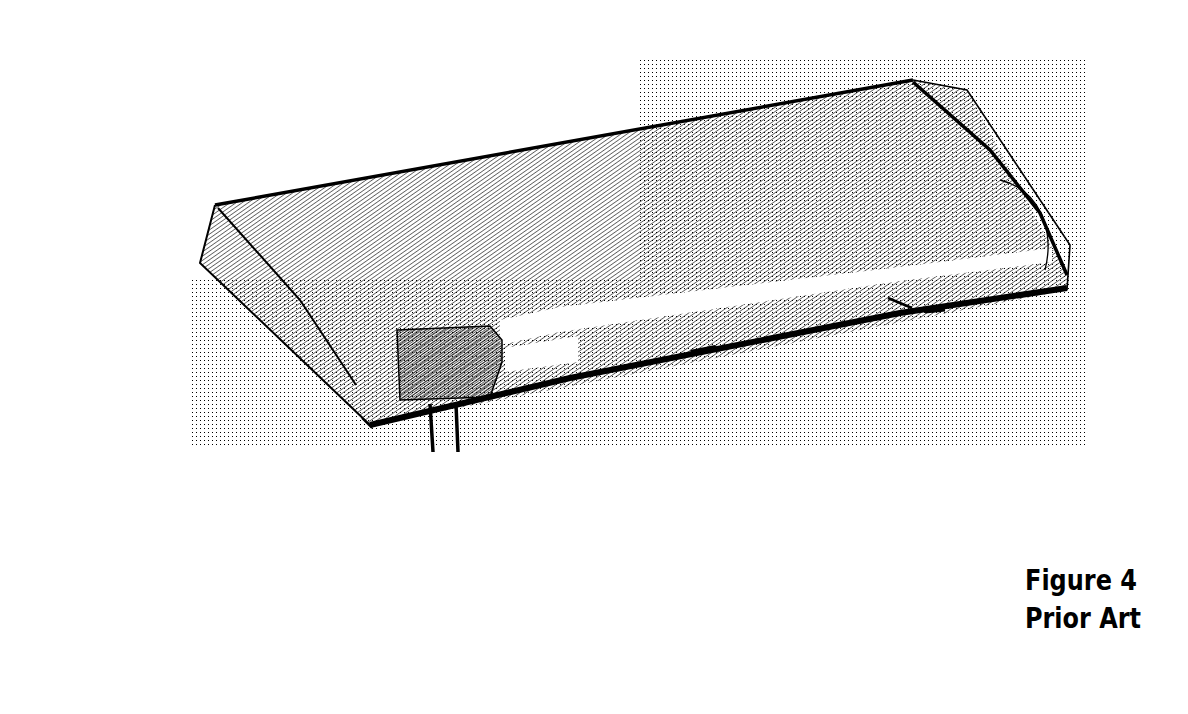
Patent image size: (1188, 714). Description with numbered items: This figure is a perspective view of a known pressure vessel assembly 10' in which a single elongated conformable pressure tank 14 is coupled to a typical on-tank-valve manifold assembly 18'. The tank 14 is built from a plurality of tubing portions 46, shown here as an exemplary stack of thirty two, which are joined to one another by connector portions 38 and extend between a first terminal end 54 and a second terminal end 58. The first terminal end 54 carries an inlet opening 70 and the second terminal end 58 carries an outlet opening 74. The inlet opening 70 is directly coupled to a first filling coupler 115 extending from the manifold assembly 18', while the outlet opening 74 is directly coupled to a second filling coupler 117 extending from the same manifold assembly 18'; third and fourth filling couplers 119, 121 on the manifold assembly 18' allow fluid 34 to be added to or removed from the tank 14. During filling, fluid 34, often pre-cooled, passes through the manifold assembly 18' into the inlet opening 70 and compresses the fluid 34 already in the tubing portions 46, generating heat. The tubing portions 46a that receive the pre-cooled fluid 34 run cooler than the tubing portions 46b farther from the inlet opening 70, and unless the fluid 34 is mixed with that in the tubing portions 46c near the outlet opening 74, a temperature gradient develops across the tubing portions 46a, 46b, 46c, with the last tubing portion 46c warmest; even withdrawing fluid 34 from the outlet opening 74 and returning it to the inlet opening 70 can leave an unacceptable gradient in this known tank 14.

The pressure vessel assembly 10' is at (240, 125).
The single elongated conformable pressure tank 14 is at (672, 120).
The on-tank-valve manifold assembly 18' is at (352, 451).
The fluid 34 is at (790, 308).
The connector portions 38 is at (908, 97).
The tubing portions 46 is at (572, 135).
The first tubing portions 46a is at (1067, 377).
The tubing portions further away from the inlet opening 46b is at (747, 117).
The last tubing portions 46c is at (930, 317).
The first terminal end 54 is at (520, 330).
The second terminal end 58 is at (523, 380).
The inlet opening 70 is at (550, 317).
The outlet opening 74 is at (557, 380).
The first filling coupler 115 is at (300, 348).
The second filling coupler 117 is at (523, 380).
The third filling coupler 119 is at (428, 454).
The fourth filling coupler 121 is at (457, 456).